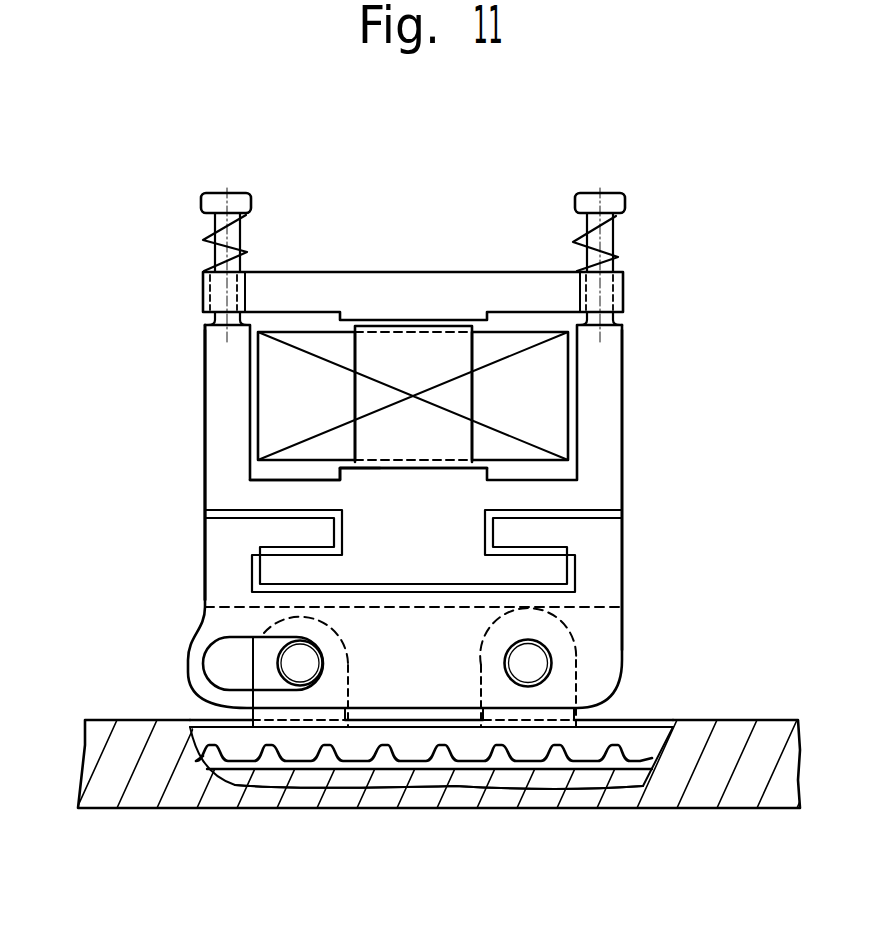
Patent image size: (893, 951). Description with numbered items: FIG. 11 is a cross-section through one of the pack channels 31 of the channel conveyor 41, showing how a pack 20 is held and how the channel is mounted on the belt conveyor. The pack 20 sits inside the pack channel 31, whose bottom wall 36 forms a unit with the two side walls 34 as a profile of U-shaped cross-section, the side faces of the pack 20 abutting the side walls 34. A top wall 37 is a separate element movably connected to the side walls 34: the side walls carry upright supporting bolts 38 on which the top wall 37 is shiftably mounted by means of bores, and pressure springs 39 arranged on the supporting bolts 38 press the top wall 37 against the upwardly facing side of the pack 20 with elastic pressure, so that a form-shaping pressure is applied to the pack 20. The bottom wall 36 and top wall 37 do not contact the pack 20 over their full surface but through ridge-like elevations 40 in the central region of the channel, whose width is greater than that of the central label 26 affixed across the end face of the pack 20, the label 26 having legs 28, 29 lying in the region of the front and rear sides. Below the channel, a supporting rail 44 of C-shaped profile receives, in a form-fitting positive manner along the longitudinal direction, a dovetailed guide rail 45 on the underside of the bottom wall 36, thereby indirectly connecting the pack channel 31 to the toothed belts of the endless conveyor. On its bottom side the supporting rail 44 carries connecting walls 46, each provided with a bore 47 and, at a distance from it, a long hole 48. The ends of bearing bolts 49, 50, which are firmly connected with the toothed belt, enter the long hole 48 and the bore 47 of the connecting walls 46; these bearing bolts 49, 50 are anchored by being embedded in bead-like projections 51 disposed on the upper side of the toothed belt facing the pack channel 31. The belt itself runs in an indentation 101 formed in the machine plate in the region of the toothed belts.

The pack 20 is at (553, 373).
The label 26 is at (436, 352).
The leg 28 is at (357, 323).
The leg 29 is at (390, 468).
The pack channel 31 is at (158, 365).
The side wall 34 is at (205, 405).
The bottom wall 36 is at (547, 492).
The top wall 37 is at (375, 288).
The supporting bolt 38 is at (213, 252).
The pressure spring 39 is at (247, 222).
The ridge-like elevation 40 is at (481, 312).
The channel conveyor 41 is at (627, 780).
The supporting rail 44 is at (625, 573).
The guide rail 45 is at (305, 570).
The connecting wall 46 is at (603, 643).
The bore 47 is at (553, 680).
The long hole 48 is at (217, 662).
The bearing bolt 49 is at (300, 668).
The bearing bolt 50 is at (528, 668).
The bead-like projection 51 is at (253, 722).
The indentation 101 is at (487, 787).